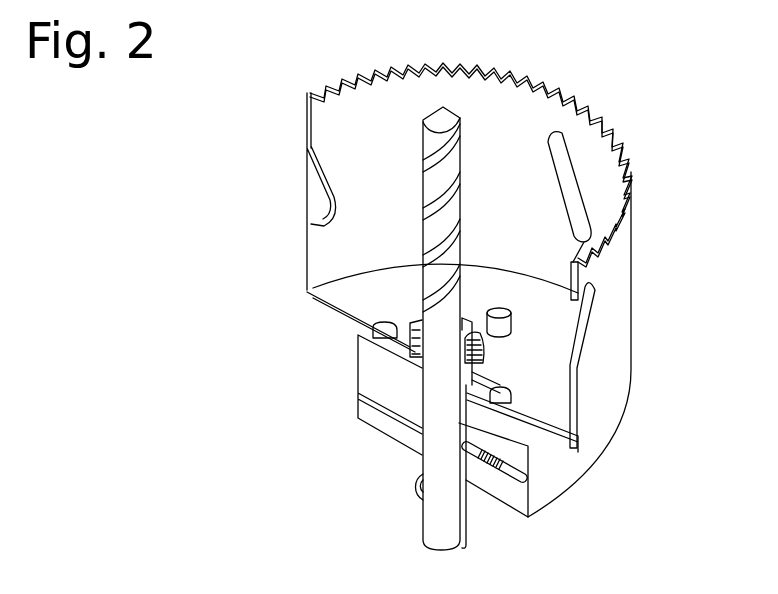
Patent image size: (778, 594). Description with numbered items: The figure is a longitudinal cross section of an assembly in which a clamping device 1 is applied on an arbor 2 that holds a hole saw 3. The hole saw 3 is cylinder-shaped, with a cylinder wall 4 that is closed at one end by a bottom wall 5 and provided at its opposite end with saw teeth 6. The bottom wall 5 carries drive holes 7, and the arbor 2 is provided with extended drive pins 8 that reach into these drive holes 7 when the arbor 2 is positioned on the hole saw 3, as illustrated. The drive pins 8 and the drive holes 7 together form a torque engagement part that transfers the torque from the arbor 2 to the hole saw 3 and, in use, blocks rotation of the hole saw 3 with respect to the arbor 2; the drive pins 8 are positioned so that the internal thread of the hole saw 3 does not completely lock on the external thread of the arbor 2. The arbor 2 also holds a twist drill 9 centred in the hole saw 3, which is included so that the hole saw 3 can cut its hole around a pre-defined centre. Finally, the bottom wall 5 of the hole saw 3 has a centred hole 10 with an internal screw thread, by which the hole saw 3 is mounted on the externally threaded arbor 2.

The clamping device 1 is at (348, 378).
The arbor 2 is at (477, 510).
The hole saw 3 is at (627, 323).
The cylinder wall 4 is at (615, 250).
The bottom wall 5 is at (562, 445).
The saw teeth 6 is at (591, 107).
The drive holes 7 is at (388, 330).
The drive pins 8 is at (500, 309).
The twist drill 9 is at (433, 521).
The centred hole 10 is at (412, 360).